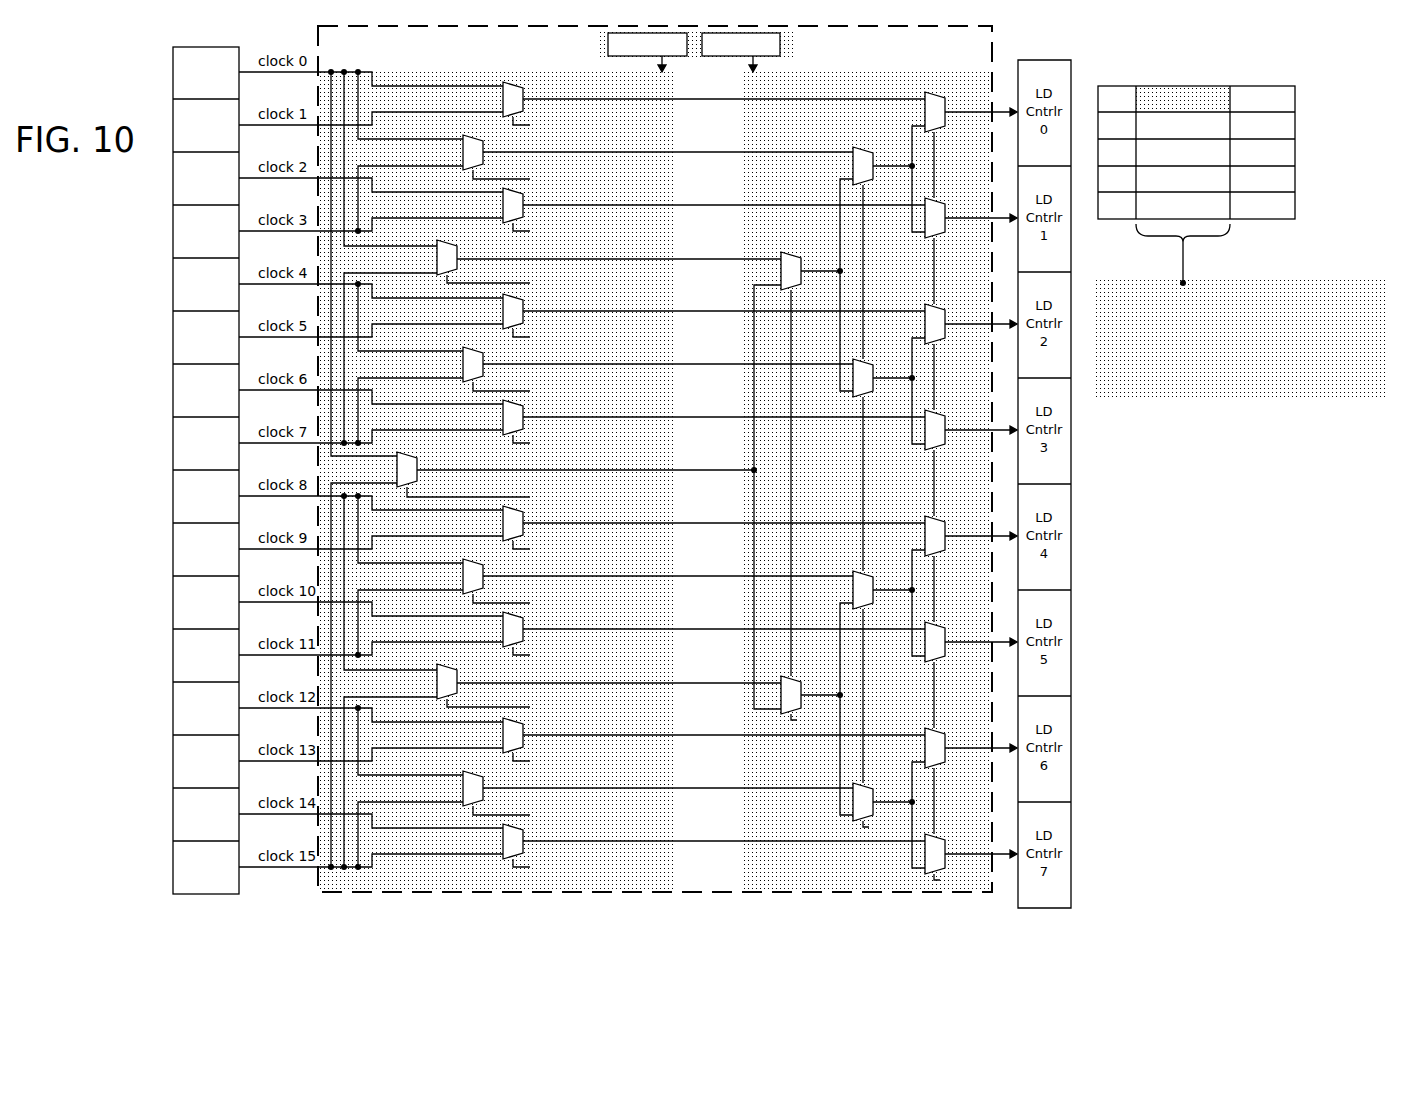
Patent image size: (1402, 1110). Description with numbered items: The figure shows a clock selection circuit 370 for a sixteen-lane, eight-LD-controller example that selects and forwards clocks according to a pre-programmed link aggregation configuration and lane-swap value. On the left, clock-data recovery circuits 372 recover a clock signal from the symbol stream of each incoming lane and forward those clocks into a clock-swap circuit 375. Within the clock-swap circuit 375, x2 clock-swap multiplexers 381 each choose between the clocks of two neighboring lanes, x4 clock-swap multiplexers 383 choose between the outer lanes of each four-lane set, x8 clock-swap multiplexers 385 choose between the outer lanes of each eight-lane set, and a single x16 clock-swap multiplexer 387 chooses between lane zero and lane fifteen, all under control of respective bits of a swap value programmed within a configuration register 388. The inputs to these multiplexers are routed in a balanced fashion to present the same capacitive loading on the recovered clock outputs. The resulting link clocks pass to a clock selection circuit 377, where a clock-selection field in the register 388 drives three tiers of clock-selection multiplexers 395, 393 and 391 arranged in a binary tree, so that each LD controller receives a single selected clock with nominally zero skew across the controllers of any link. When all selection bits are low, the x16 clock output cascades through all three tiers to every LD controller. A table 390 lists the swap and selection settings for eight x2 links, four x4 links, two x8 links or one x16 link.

The clock selection circuit 370 is at (431, 55).
The clock-data recovery circuits 372 is at (208, 40).
The clock-swap circuit 375 is at (478, 72).
The clock selection circuit 377 is at (742, 92).
The x2 clock-swap multiplexers 381 is at (503, 843).
The x4 clock-swap multiplexers 383 is at (463, 790).
The x8 clock-swap multiplexers 385 is at (437, 683).
The x16 clock-swap multiplexer 387 is at (397, 469).
The configuration register 388 is at (597, 46).
The link aggregation configuration table 390 is at (793, 45).
The first-tier clock-selection multiplexers 391 is at (945, 99).
The second-tier clock-selection multiplexers 393 is at (873, 153).
The third-tier clock-selection multiplexers 395 is at (801, 258).